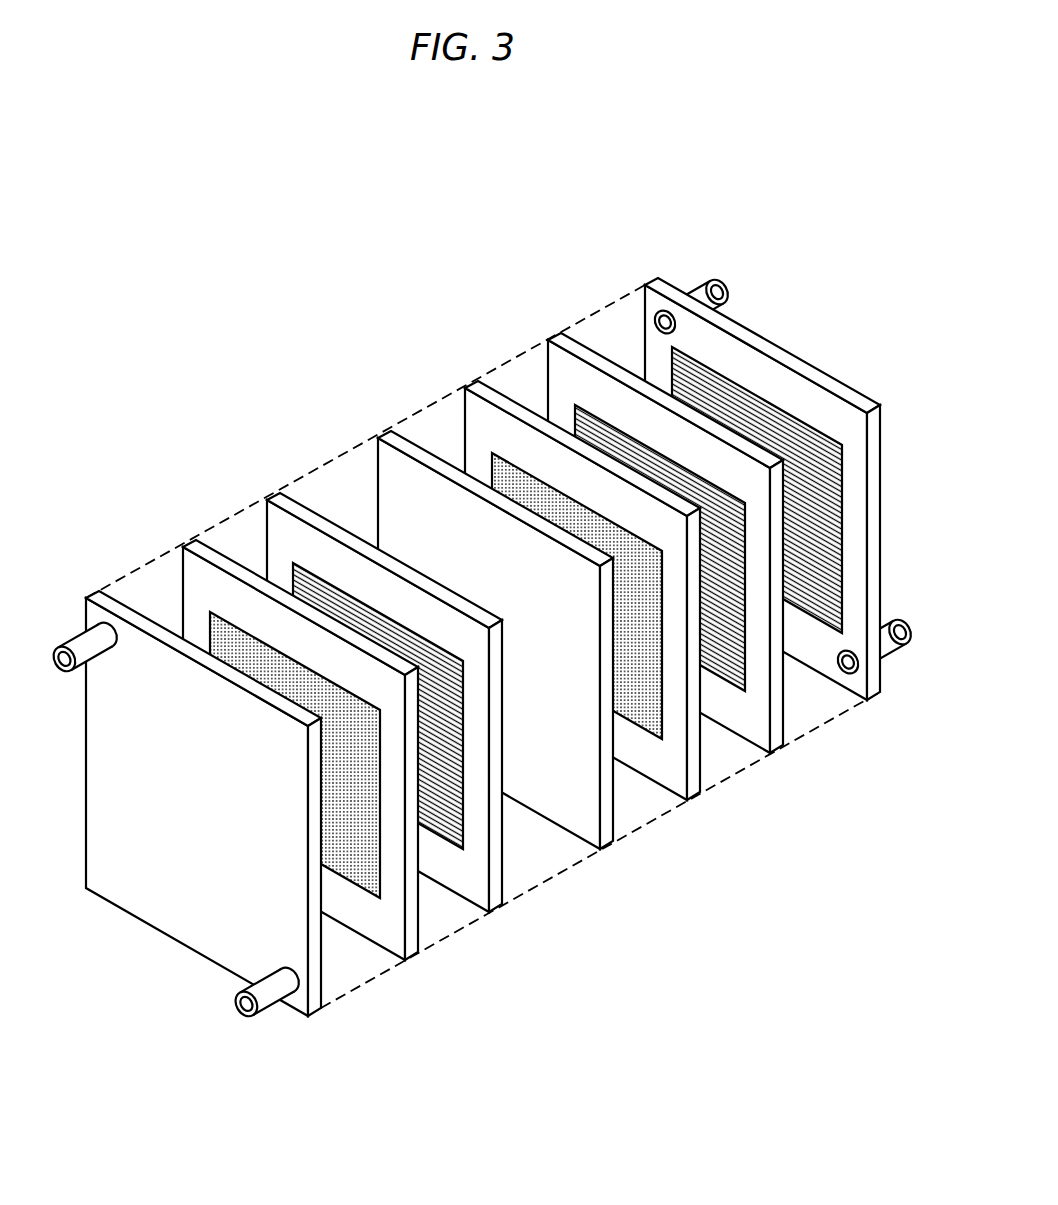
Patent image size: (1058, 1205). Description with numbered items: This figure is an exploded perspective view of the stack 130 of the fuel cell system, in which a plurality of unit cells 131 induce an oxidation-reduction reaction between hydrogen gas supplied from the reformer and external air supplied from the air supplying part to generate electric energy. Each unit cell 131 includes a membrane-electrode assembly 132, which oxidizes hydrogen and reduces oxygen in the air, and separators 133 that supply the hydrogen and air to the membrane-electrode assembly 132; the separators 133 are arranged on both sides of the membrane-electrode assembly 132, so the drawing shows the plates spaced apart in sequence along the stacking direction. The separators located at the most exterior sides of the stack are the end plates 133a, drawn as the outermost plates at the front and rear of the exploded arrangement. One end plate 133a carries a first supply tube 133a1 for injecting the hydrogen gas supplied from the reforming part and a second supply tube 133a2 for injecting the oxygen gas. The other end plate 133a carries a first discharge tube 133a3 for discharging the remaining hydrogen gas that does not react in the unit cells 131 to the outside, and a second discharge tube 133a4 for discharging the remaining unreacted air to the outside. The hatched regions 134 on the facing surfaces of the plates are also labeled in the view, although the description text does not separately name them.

The stack 130 is at (498, 642).
The unit cell 131 is at (563, 549).
The membrane-electrode assembly 132 is at (484, 392).
The separator 133 is at (723, 660).
The end plate 133a is at (498, 642).
The first supply tube 133a1 is at (713, 290).
The second supply tube 133a2 is at (897, 642).
The first discharge tube 133a3 is at (265, 1000).
The second discharge tube 133a4 is at (77, 643).
The flow channel 134 is at (822, 613).